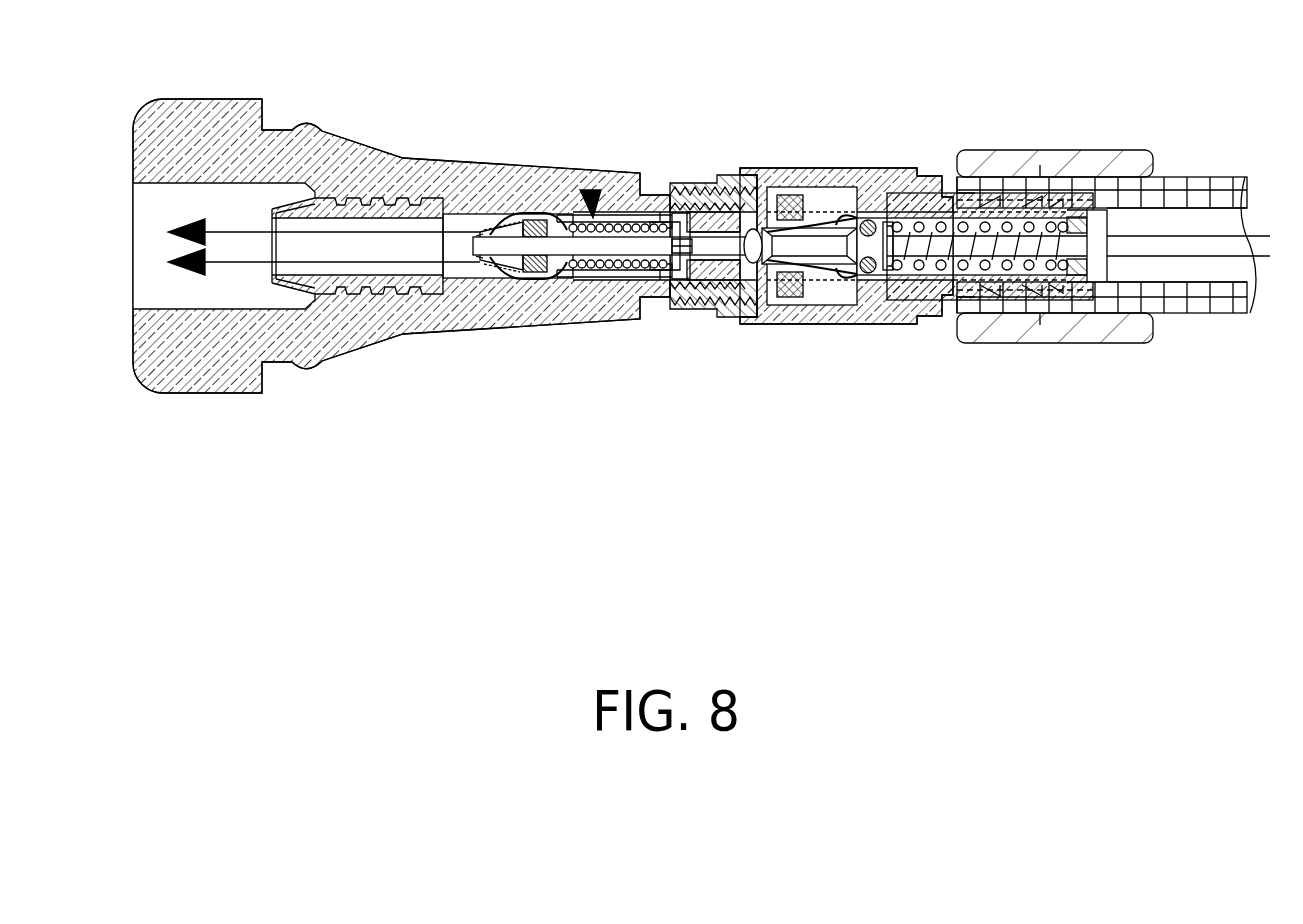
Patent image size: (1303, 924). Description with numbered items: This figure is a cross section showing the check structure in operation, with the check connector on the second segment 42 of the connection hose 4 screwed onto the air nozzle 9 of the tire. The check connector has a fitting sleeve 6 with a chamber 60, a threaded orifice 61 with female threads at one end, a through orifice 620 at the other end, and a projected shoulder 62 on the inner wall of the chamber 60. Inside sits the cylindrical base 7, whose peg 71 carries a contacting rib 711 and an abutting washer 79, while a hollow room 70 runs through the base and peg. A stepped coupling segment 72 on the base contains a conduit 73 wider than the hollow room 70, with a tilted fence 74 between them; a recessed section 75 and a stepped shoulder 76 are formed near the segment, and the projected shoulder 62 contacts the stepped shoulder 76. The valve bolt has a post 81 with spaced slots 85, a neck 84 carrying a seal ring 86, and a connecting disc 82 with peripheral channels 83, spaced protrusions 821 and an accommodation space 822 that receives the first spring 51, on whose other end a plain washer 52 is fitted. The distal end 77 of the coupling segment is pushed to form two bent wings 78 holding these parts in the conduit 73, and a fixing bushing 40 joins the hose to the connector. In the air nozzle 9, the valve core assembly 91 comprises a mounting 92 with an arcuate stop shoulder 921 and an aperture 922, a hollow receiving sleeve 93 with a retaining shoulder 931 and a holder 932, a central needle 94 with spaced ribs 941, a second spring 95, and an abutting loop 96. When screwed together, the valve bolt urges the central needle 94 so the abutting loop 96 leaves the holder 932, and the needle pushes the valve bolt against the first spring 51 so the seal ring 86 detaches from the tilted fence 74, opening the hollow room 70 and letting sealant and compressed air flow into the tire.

The connection hose 4 is at (1215, 312).
The fitting sleeve 6 is at (818, 318).
The cylindrical base 7 is at (830, 300).
The air nozzle 9 is at (442, 317).
The fixing bushing 40 is at (1097, 342).
The second segment 42 is at (1015, 345).
The first spring 51 is at (1060, 180).
The plain washer 52 is at (1110, 177).
The chamber 60 is at (800, 310).
The threaded orifice 61 is at (720, 305).
The projected shoulder 62 is at (940, 302).
The hollow room 70 is at (820, 215).
The peg 71 is at (745, 205).
The stepped coupling segment 72 is at (1060, 345).
The conduit 73 is at (1070, 200).
The tilted fence 74 is at (855, 300).
The recessed section 75 is at (1010, 222).
The stepped shoulder 76 is at (975, 195).
The distal end 77 is at (1120, 205).
The bent wings 78 is at (1105, 215).
The abutting washer 79 is at (788, 305).
The post 81 is at (800, 232).
The connecting disc 82 is at (885, 225).
The peripheral channels 83 is at (872, 222).
The neck 84 is at (863, 220).
The spaced slots 85 is at (807, 230).
The seal ring 86 is at (862, 290).
The valve core assembly 91 is at (585, 190).
The mounting 92 is at (690, 205).
The hollow receiving sleeve 93 is at (620, 308).
The central needle 94 is at (525, 275).
The second spring 95 is at (605, 305).
The abutting loop 96 is at (540, 215).
The through orifice 620 is at (933, 302).
The contacting rib 711 is at (757, 315).
The spaced protrusions 821 is at (900, 225).
The accommodation space 822 is at (945, 200).
The arcuate stop shoulder 921 is at (663, 212).
The aperture 922 is at (735, 190).
The retaining shoulder 931 is at (655, 213).
The holder 932 is at (565, 222).
The spaced ribs 941 is at (657, 300).